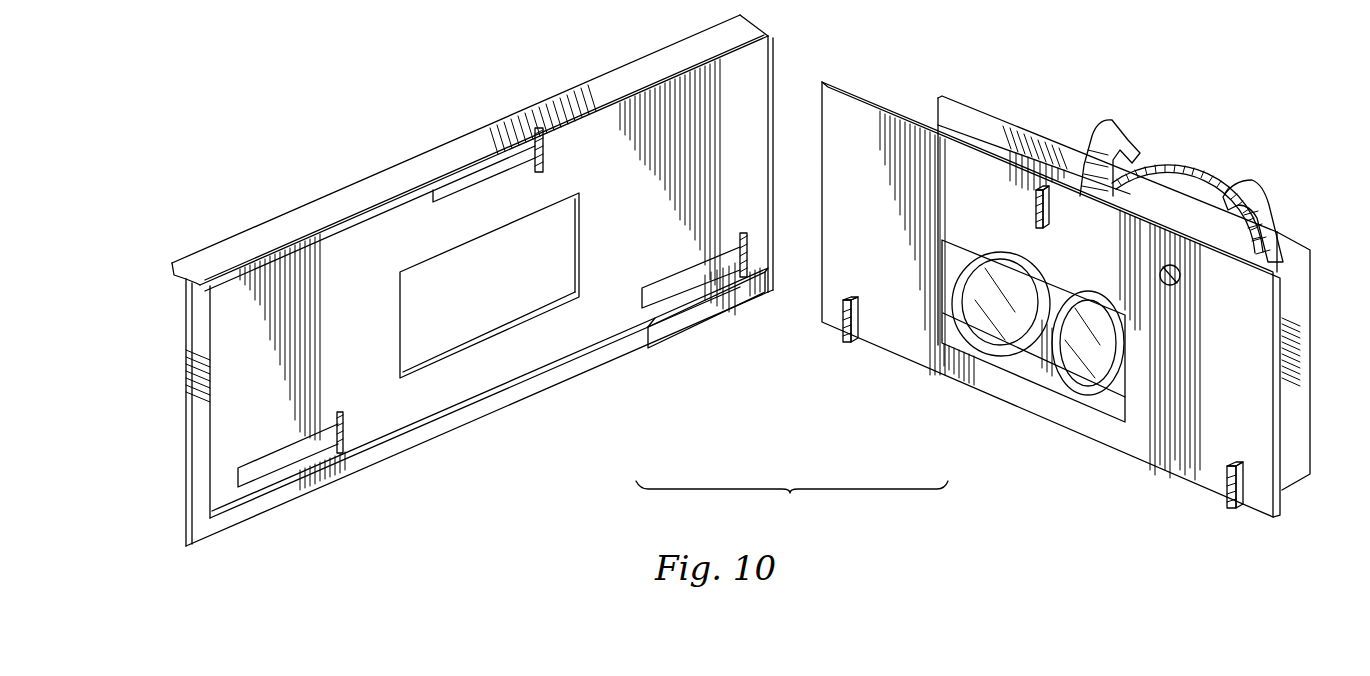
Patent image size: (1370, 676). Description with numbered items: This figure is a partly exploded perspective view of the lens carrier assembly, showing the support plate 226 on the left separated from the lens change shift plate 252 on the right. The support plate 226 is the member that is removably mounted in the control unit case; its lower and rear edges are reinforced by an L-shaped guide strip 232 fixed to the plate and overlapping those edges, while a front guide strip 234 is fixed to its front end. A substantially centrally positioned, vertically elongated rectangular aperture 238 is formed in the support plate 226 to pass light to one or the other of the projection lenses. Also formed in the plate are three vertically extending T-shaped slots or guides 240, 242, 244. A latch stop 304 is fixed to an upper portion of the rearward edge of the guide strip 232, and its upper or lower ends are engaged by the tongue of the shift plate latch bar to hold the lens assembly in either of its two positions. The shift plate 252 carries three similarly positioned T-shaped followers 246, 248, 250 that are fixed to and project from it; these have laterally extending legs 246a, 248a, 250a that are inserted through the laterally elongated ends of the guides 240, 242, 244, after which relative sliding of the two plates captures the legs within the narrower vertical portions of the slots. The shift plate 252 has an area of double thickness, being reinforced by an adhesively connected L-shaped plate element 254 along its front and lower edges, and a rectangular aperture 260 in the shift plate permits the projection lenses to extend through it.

The support plate 226 is at (472, 291).
The L-shaped guide strip 232 is at (475, 410).
The front guide strip 234 is at (470, 150).
The rectangular aperture 238 is at (489, 285).
The T-shaped guide slot 240 is at (438, 183).
The T-shaped guide slot 242 is at (694, 274).
The T-shaped guide slot 244 is at (289, 449).
The latch stop 304 is at (708, 320).
The lens change shift plate 252 is at (1051, 299).
The L-shaped plate element 254 is at (1132, 309).
The rectangular aperture 260 is at (1033, 336).
The shift plate follower 246 is at (1007, 209).
The laterally extending leg 246a is at (1035, 192).
The shift plate follower 248 is at (1225, 505).
The laterally extending leg 248a is at (1227, 472).
The shift plate follower 250 is at (818, 337).
The laterally extending leg 250a is at (842, 325).